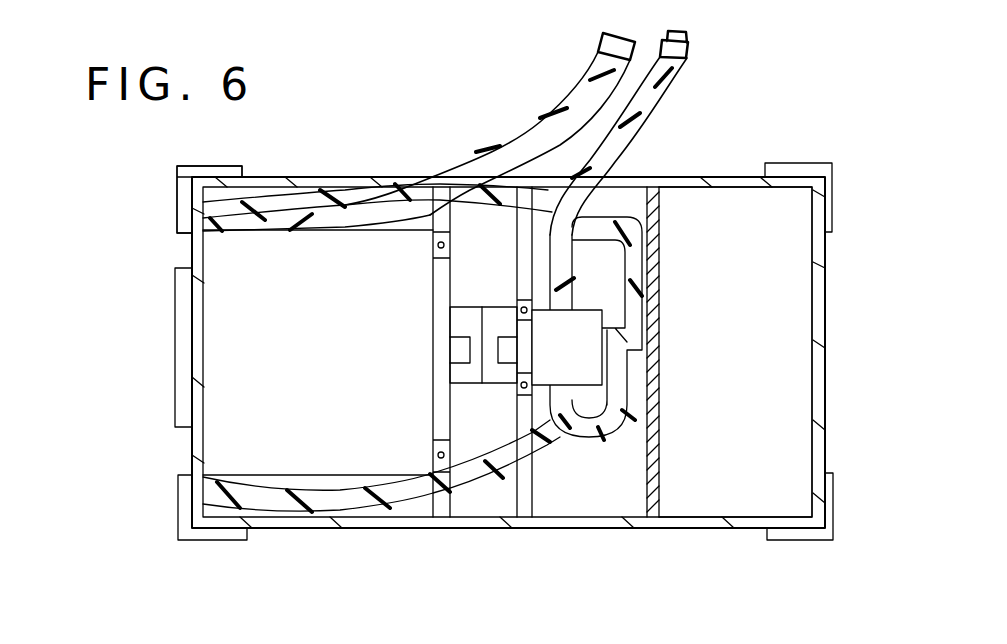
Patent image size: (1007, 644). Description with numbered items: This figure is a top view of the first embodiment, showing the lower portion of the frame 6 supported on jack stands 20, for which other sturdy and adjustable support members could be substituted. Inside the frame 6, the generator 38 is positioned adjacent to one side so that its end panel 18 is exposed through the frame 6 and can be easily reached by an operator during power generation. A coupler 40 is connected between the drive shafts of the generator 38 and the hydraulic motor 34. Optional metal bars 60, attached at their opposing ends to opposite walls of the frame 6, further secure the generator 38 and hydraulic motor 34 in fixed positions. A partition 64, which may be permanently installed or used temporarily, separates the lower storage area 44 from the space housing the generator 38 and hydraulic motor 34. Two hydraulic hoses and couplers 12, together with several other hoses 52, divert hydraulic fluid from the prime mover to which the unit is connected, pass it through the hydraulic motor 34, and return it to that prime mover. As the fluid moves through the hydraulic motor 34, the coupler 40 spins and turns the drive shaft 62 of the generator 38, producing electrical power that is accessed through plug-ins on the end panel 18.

The frame 6 is at (820, 247).
The hydraulic hoses and couplers 12 is at (583, 100).
The end panel 18 is at (183, 392).
The jack stands 20 is at (177, 200).
The hydraulic motor 34 is at (573, 352).
The generator 38 is at (262, 263).
The coupler 40 is at (491, 314).
The lower storage area 44 is at (768, 376).
The hoses 52 is at (328, 497).
The metal bars 60 is at (522, 470).
The drive shaft 62 is at (457, 350).
The partition 64 is at (657, 455).